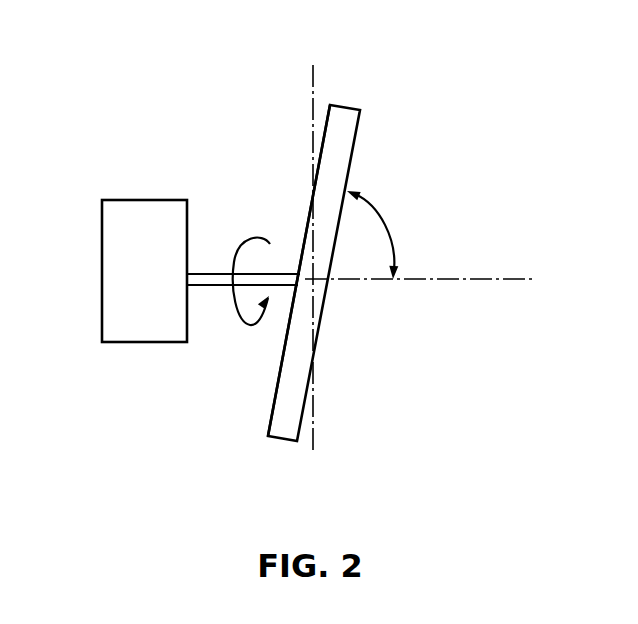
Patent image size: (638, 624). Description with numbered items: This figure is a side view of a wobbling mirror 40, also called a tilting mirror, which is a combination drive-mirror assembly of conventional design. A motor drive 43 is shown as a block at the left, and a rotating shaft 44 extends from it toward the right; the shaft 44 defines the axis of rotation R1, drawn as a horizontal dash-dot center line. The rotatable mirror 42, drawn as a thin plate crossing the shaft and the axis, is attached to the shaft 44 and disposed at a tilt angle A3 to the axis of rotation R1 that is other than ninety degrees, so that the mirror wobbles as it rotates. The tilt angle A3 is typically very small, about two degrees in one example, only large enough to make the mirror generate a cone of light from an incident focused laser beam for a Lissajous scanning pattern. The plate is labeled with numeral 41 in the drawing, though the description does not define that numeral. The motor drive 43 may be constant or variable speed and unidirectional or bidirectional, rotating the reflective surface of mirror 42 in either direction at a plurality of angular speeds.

The wobbling mirror 40 is at (121, 48).
The mirror 41 is at (336, 295).
The rotatable mirror 42 is at (292, 396).
The motor drive 43 is at (113, 298).
The rotating shaft 44 is at (204, 272).
The tilt angle A3 is at (386, 235).
The axis of rotation R1 is at (473, 296).